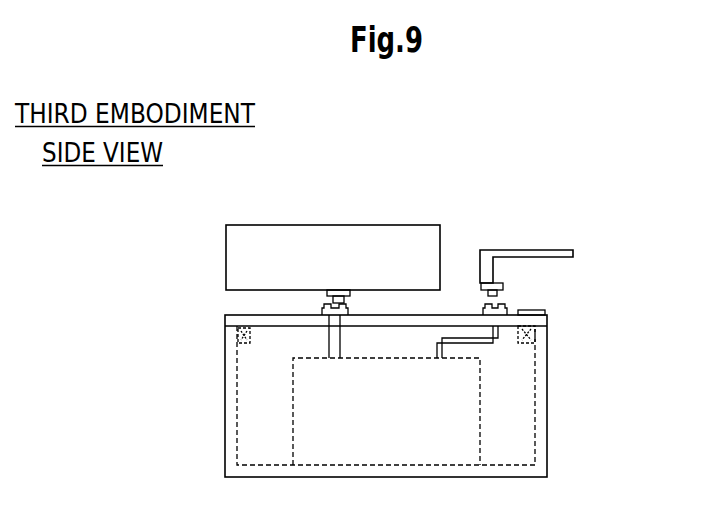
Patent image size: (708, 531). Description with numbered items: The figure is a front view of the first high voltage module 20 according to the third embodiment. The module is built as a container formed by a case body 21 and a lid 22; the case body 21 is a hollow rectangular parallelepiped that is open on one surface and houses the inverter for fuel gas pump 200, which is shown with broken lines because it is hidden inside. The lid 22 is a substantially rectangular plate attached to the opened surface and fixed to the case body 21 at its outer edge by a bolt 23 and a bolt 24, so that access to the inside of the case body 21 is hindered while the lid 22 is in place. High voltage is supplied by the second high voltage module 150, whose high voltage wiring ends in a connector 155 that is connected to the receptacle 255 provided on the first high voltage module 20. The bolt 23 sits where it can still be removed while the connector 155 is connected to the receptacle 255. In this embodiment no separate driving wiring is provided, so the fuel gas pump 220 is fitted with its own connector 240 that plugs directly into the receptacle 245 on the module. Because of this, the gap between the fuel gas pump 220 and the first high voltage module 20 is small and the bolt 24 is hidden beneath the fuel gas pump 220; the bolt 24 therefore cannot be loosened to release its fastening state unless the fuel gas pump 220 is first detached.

The first high voltage module 20 is at (611, 250).
The case body 21 is at (547, 380).
The lid 22 is at (225, 323).
The bolt 23 is at (547, 313).
The bolt 24 is at (320, 310).
The second high voltage module 150 is at (533, 250).
The connector 155 is at (486, 282).
The inverter for fuel gas pump 200 is at (408, 422).
The fuel gas pump 220 is at (268, 225).
The connector 240 is at (327, 298).
The receptacle 245 is at (320, 313).
The receptacle 255 is at (480, 306).